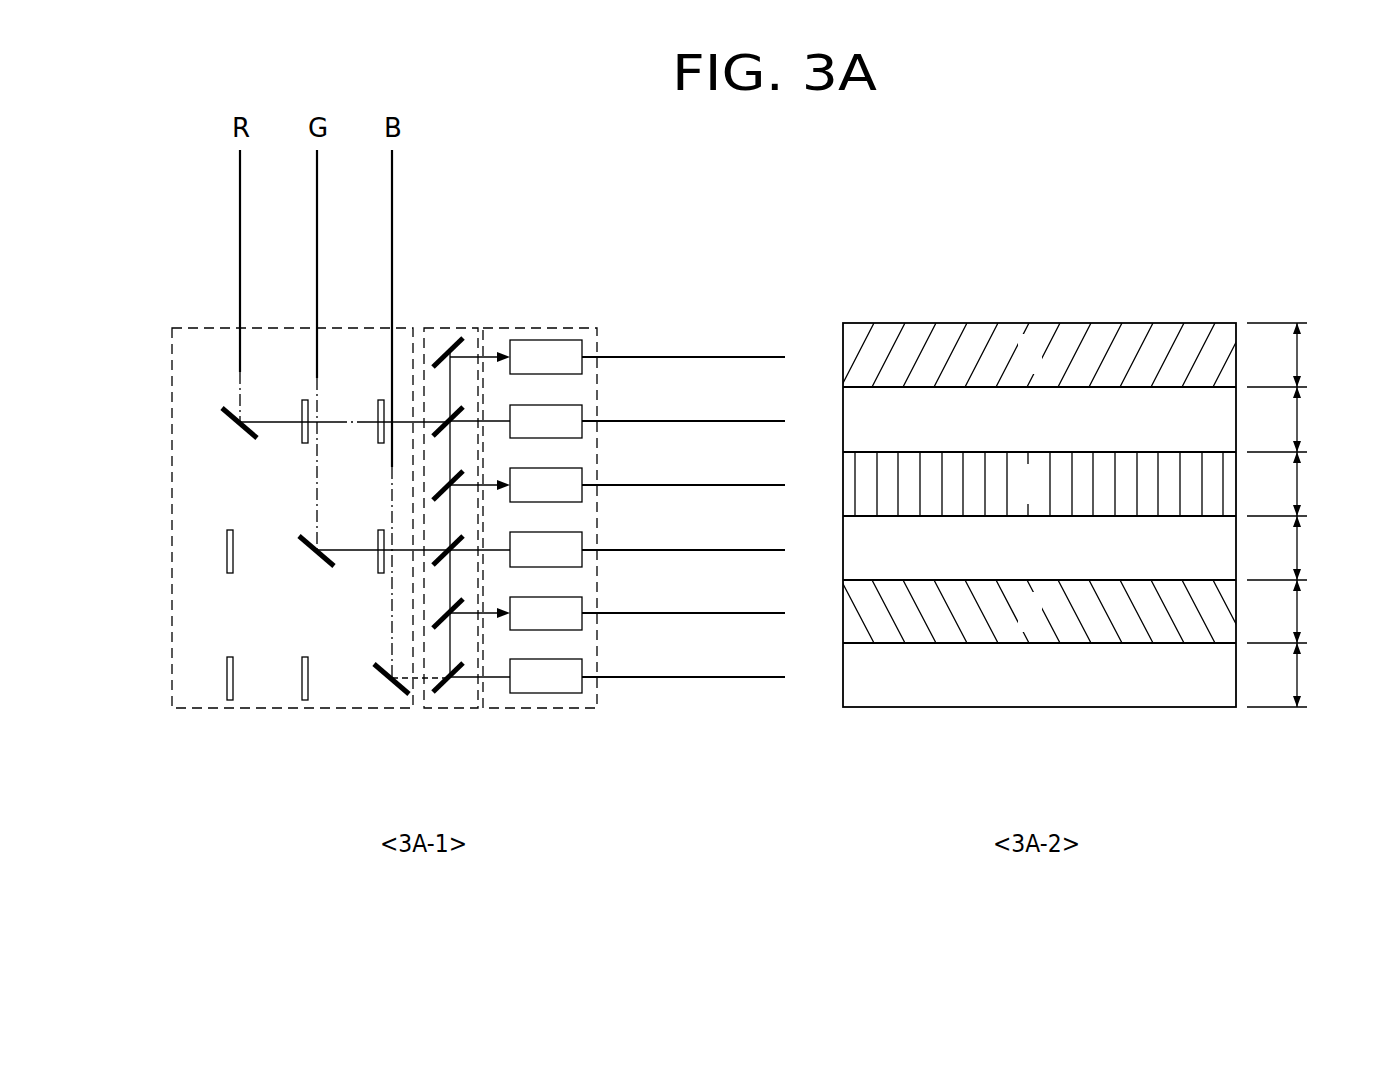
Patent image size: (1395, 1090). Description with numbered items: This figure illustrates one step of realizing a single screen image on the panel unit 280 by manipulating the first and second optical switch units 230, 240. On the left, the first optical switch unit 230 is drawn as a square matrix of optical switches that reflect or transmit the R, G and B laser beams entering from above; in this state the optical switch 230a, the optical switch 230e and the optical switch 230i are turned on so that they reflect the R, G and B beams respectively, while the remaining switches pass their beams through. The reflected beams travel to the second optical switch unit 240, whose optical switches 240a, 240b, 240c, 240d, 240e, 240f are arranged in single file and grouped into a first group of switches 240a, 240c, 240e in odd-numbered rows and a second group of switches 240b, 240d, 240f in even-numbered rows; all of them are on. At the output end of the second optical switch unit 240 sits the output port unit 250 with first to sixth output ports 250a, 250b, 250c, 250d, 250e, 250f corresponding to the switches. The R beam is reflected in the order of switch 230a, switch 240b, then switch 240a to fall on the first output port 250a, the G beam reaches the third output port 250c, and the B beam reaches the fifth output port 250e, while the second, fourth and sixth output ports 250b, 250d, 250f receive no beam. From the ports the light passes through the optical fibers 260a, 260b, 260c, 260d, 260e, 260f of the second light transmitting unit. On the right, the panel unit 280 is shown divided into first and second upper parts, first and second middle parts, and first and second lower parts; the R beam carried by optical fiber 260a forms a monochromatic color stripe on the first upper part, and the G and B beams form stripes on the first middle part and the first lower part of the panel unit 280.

The first optical switch unit 230 is at (250, 708).
The optical switch 230a is at (228, 423).
The optical switch 230e is at (306, 553).
The optical switch 230i is at (384, 690).
The second optical switch unit 240 is at (442, 708).
The optical switch 240a is at (462, 338).
The optical switch 240b is at (440, 424).
The optical switch 240c is at (440, 487).
The optical switch 240d is at (440, 552).
The optical switch 240e is at (440, 615).
The optical switch 240f is at (440, 680).
The output port unit 250 is at (538, 708).
The first output port 250a is at (564, 340).
The second output port 250b is at (564, 405).
The third output port 250c is at (564, 468).
The fourth output port 250d is at (564, 532).
The fifth output port 250e is at (564, 597).
The sixth output port 250f is at (564, 659).
The optical fiber 260a is at (712, 358).
The optical fiber 260b is at (712, 422).
The optical fiber 260c is at (712, 486).
The optical fiber 260d is at (712, 551).
The optical fiber 260e is at (712, 614).
The optical fiber 260f is at (712, 678).
The panel unit 280 is at (1030, 708).